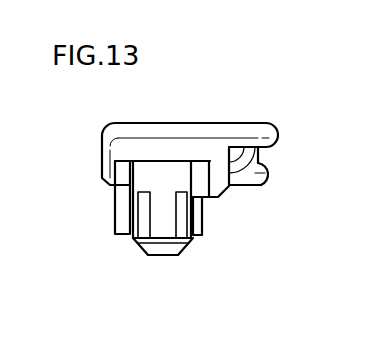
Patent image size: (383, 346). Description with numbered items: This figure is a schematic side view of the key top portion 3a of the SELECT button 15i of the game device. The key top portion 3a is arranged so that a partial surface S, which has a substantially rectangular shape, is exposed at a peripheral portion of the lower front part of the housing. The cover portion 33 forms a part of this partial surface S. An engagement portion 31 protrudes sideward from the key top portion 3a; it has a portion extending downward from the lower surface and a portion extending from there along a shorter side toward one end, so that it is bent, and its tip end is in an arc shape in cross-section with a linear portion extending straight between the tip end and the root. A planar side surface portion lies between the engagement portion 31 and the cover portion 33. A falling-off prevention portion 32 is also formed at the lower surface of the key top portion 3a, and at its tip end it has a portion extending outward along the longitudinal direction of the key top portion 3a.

The key top portion 3a is at (137, 133).
The partial surface S is at (180, 122).
The SELECT button 15i is at (212, 133).
The cover portion 33 is at (250, 133).
The engagement portion 31 is at (275, 177).
The falling-off prevention portion 32 is at (162, 218).